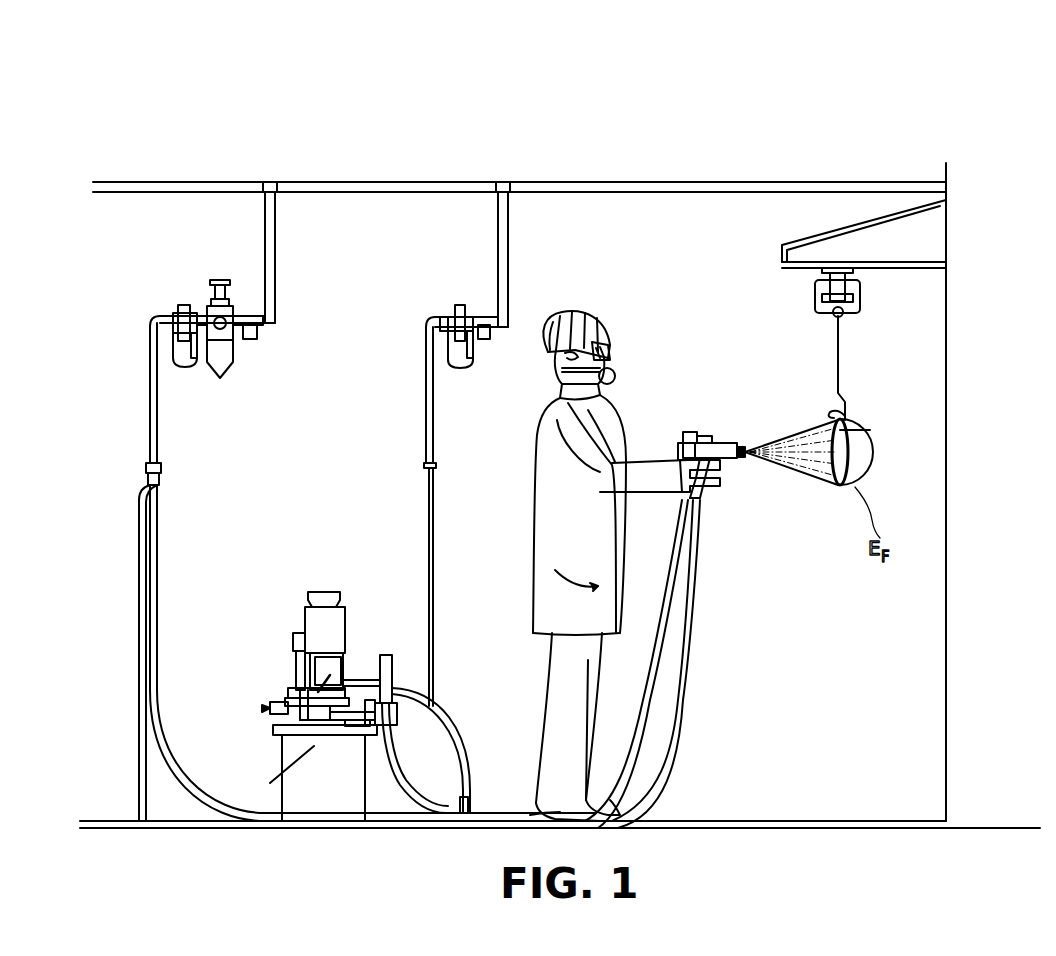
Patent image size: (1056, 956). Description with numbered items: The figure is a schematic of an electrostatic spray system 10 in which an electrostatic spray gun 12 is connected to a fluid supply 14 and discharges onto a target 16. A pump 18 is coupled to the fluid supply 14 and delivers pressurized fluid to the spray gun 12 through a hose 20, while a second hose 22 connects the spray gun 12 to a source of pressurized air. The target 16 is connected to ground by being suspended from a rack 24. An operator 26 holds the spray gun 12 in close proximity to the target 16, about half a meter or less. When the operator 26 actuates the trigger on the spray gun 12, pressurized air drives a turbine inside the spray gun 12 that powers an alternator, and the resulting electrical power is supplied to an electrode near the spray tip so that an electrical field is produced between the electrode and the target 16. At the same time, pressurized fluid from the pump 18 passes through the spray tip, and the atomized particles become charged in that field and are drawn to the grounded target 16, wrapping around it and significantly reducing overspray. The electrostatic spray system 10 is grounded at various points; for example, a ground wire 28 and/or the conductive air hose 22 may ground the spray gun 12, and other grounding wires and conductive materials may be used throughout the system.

The electrostatic spray system 10 is at (890, 150).
The electrostatic spray gun 12 is at (737, 425).
The fluid supply 14 is at (325, 790).
The target 16 is at (874, 445).
The pump 18 is at (320, 620).
The hose 20 is at (398, 785).
The hose 22 is at (168, 736).
The rack 24 is at (890, 298).
The operator 26 is at (645, 318).
The ground wire 28 is at (140, 652).